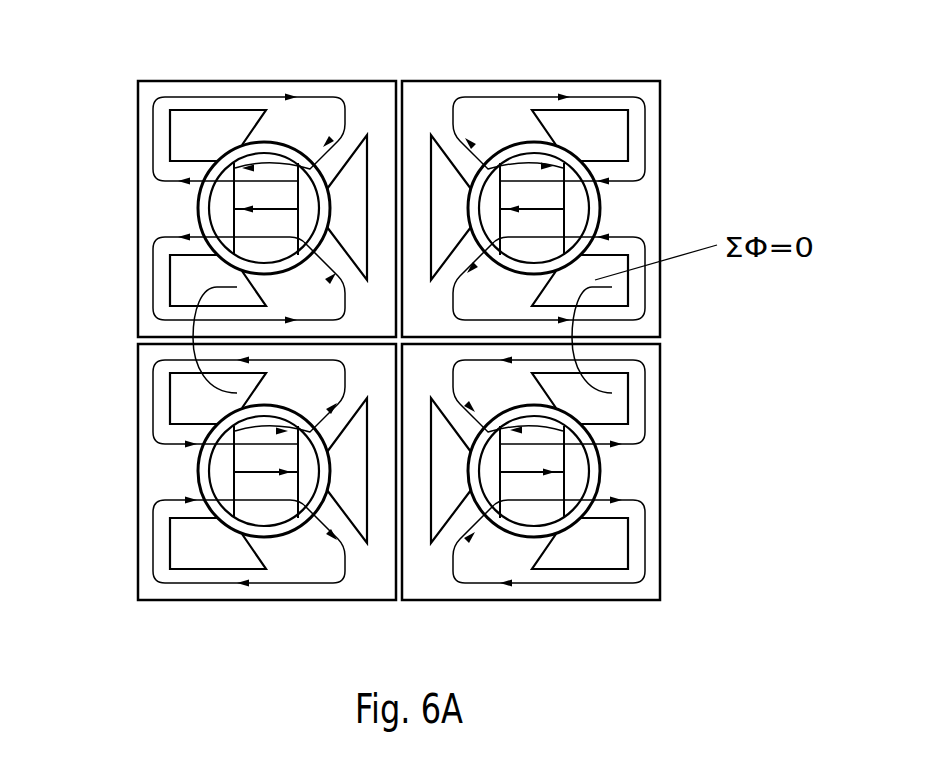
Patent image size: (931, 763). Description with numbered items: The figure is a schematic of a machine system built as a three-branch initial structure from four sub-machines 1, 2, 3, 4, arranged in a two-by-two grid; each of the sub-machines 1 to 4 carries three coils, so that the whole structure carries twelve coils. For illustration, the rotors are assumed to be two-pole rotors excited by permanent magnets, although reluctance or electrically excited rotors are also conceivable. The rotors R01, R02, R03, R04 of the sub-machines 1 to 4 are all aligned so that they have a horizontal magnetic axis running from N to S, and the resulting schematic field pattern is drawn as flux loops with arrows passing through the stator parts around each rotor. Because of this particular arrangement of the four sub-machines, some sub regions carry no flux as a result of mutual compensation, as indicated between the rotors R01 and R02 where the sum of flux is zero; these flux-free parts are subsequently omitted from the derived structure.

The sub-machine 1 is at (560, 604).
The sub-machine 2 is at (558, 80).
The sub-machine 3 is at (245, 80).
The sub-machine 4 is at (240, 604).
The rotor R01 is at (600, 458).
The rotor R02 is at (600, 207).
The rotor R03 is at (199, 208).
The rotor R04 is at (199, 460).